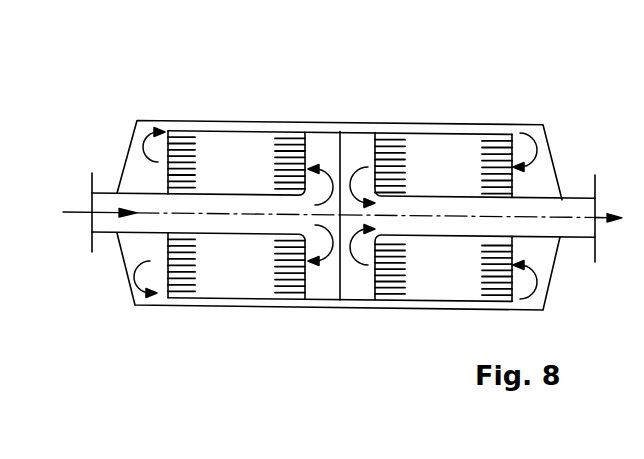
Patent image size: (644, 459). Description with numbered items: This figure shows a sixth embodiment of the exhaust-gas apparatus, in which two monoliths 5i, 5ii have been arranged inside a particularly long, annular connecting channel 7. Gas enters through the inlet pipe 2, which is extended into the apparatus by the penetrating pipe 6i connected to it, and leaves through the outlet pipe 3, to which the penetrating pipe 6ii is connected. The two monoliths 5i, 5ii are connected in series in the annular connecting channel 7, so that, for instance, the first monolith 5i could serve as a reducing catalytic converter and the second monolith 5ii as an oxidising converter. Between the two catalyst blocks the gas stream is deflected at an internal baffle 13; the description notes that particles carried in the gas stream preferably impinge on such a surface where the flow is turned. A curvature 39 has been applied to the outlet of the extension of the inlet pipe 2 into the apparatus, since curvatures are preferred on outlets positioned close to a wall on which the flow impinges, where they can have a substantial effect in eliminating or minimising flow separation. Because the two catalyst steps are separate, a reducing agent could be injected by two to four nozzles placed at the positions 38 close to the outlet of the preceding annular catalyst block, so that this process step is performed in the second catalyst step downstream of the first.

The inlet pipe 2 is at (107, 193).
The outlet pipe 3 is at (583, 198).
The monolith 5i is at (213, 158).
The monolith 5ii is at (422, 168).
The penetrating pipe 6i is at (242, 203).
The penetrating pipe 6ii is at (473, 207).
The annular connecting channel 7 is at (332, 123).
The internal baffle 13 is at (340, 297).
The nozzle positions 38 is at (138, 255).
The curvature 39 is at (172, 130).